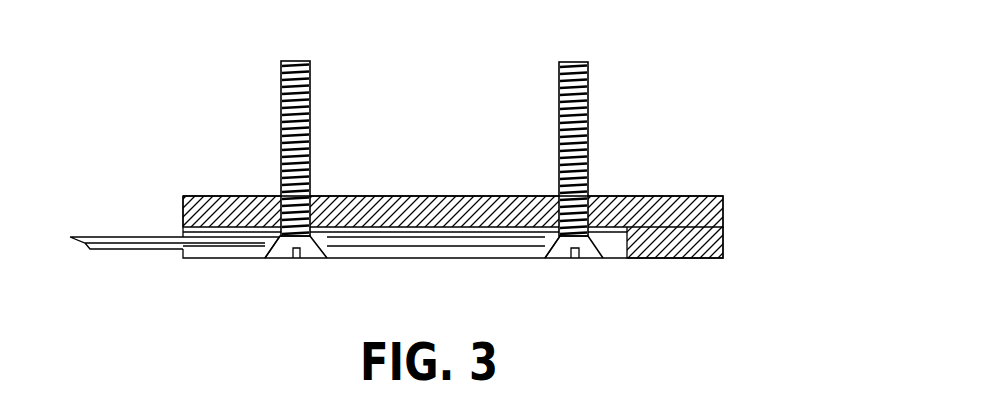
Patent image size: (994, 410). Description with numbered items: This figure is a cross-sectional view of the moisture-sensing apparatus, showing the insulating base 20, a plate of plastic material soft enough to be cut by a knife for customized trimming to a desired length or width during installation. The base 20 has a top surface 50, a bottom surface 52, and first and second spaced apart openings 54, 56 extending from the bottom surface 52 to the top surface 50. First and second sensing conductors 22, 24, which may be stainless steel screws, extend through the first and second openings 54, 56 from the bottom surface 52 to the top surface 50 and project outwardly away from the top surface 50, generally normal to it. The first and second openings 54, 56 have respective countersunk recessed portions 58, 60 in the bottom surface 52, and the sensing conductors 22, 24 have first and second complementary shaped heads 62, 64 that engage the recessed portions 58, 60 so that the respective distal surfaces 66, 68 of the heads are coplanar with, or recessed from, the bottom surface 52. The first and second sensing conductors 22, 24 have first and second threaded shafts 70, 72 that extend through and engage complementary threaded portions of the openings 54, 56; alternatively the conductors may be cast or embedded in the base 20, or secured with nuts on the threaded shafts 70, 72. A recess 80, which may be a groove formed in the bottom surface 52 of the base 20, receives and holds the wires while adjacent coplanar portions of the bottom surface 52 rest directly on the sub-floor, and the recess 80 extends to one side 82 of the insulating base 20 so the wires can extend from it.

The insulating base 20 is at (723, 226).
The first sensing conductor 22 is at (270, 124).
The second sensing conductor 24 is at (550, 124).
The top surface 50 is at (686, 197).
The bottom surface 52 is at (687, 258).
The first opening 54 is at (315, 191).
The second opening 56 is at (595, 192).
The first recessed portion 58 is at (291, 281).
The second recessed portion 60 is at (569, 281).
The first head 62 is at (280, 258).
The second head 64 is at (553, 258).
The first distal surface 66 is at (296, 258).
The second distal surface 68 is at (575, 258).
The first threaded shaft 70 is at (281, 103).
The second threaded shaft 72 is at (559, 103).
The recess 80 is at (457, 252).
The side 82 is at (182, 207).